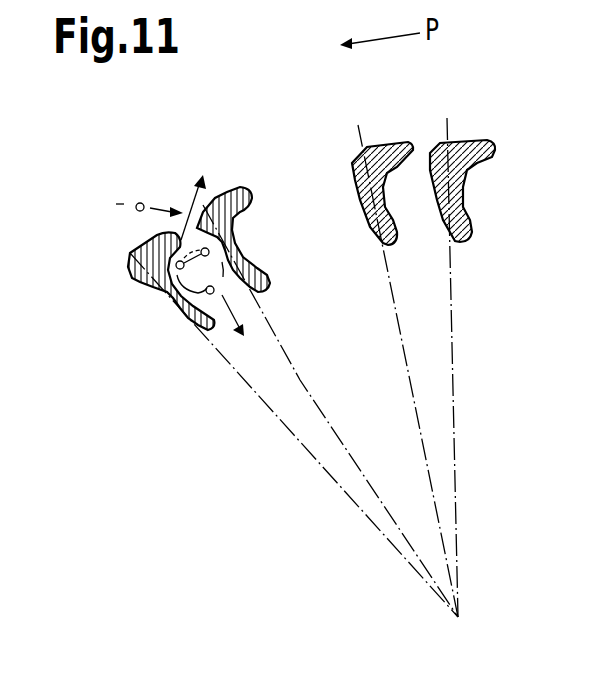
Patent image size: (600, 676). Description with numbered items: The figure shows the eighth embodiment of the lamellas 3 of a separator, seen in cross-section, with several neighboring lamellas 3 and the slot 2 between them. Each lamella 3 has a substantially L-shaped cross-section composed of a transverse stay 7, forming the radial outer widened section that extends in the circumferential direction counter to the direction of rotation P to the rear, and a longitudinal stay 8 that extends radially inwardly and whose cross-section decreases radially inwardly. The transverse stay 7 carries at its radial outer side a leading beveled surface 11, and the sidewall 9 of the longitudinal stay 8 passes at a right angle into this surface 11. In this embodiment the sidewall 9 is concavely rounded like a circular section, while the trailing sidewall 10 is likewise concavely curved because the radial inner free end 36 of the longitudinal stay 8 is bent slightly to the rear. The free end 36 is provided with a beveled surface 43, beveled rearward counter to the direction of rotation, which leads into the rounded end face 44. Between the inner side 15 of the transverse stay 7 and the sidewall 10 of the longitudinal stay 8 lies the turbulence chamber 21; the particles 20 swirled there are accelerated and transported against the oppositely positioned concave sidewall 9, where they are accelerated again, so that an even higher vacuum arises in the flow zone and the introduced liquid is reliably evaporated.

The slot 2 is at (419, 152).
The lamella 3 is at (213, 200).
The transverse stay 7 is at (247, 193).
The longitudinal stay 8 is at (240, 272).
The sidewall 9 is at (228, 283).
The sidewall 10 is at (237, 255).
The beveled surface 11 is at (354, 162).
The inner side 15 is at (486, 162).
The particles 20 is at (163, 291).
The turbulence chamber 21 is at (392, 190).
The free end 36 is at (255, 286).
The beveled surface 43 is at (182, 318).
The rounded end face 44 is at (208, 331).